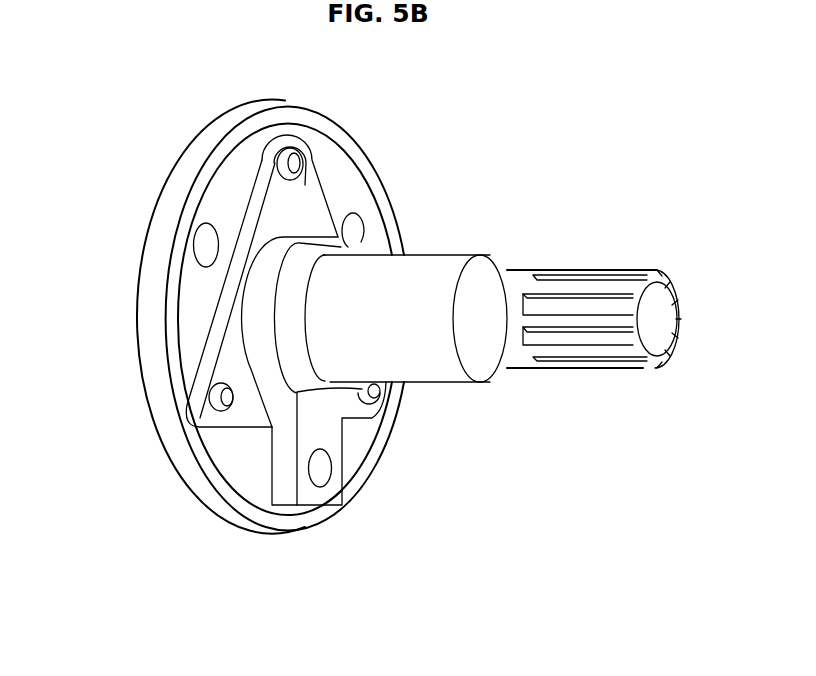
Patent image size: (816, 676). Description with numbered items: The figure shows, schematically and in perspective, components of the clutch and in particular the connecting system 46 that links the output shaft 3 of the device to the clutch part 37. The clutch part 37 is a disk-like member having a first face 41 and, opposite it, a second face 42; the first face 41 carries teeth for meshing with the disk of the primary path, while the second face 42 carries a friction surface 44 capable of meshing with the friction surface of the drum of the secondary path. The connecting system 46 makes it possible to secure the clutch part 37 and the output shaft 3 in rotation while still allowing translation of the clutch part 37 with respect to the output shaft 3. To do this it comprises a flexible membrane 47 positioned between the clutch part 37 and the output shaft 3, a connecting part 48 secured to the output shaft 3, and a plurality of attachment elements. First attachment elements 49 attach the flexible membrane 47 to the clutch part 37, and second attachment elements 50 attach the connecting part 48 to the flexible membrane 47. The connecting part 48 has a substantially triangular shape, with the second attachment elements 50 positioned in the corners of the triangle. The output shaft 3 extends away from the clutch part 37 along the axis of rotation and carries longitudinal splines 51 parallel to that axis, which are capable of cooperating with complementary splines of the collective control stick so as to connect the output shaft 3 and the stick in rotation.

The output shaft 3 is at (505, 355).
The clutch part 37 is at (288, 117).
The first face 41 is at (170, 468).
The second face 42 is at (240, 507).
The friction surface 44 is at (338, 133).
The connecting system 46 is at (175, 117).
The flexible membrane 47 is at (340, 187).
The connecting part 48 is at (272, 213).
The first attachment elements 49 is at (207, 245).
The second attachment elements 50 is at (300, 165).
The longitudinal splines 51 is at (589, 270).